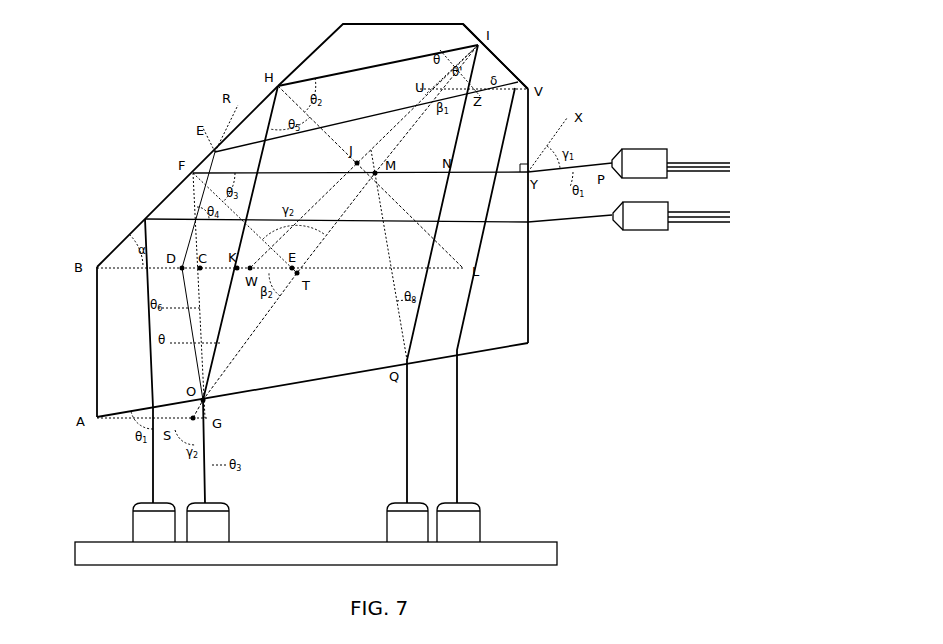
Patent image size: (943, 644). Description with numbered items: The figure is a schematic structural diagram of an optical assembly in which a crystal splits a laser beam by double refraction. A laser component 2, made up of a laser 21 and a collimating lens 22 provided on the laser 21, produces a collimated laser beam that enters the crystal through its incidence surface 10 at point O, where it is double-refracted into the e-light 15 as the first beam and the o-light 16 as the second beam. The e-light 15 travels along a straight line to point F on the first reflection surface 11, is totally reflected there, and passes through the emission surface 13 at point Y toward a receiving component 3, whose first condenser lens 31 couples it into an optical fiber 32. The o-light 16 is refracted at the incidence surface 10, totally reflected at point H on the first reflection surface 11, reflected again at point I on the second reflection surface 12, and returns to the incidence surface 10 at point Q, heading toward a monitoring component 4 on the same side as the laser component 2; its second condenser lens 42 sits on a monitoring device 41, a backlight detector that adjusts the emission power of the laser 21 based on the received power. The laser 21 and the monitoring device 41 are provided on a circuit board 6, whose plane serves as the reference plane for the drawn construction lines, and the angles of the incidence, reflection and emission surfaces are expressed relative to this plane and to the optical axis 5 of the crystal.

The laser component 2 is at (213, 513).
The receiving component 3 is at (674, 127).
The monitoring component 4 is at (408, 506).
The optical axis 5 is at (302, 292).
The circuit board 6 is at (75, 553).
The incidence surface 10 is at (442, 360).
The first reflection surface 11 is at (142, 214).
The second reflection surface 12 is at (503, 63).
The emission surface 13 is at (530, 318).
The e-light 15 is at (588, 163).
The o-light 16 is at (410, 435).
The laser 21 is at (225, 533).
The collimating lens 22 is at (220, 506).
The first condenser lens 31 is at (662, 152).
The optical fiber 32 is at (693, 165).
The monitoring device 41 is at (398, 535).
The second condenser lens 42 is at (402, 503).